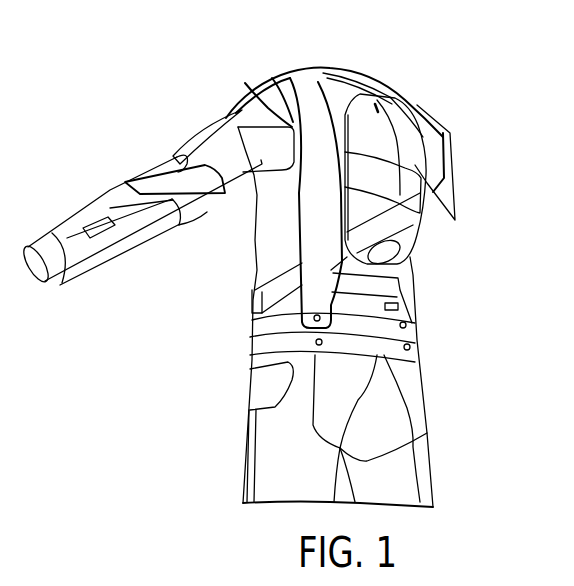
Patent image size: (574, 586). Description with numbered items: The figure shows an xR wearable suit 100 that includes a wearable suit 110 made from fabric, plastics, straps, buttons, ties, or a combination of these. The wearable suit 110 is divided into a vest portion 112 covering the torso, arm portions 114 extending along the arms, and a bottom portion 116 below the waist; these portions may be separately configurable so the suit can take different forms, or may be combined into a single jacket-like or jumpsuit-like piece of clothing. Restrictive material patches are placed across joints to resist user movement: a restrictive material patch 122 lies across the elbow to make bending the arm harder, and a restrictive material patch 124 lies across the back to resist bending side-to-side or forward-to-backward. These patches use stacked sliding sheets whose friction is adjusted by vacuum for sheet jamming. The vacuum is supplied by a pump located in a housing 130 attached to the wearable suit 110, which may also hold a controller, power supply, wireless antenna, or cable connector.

The wearable suit 100 is at (120, 67).
The wearable suit 110 is at (230, 118).
The vest portion 112 is at (476, 340).
The arm portions 114 is at (207, 210).
The bottom portion 116 is at (476, 347).
The restrictive material patch 122 is at (137, 187).
The restrictive material patch 124 is at (313, 307).
The housing 130 is at (383, 118).